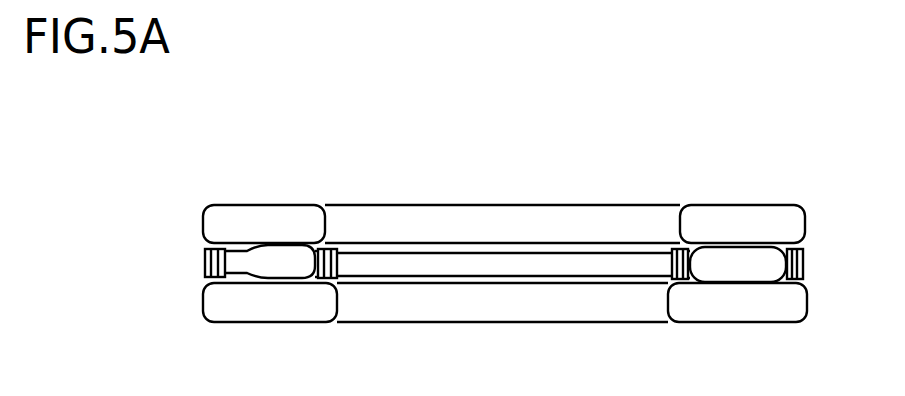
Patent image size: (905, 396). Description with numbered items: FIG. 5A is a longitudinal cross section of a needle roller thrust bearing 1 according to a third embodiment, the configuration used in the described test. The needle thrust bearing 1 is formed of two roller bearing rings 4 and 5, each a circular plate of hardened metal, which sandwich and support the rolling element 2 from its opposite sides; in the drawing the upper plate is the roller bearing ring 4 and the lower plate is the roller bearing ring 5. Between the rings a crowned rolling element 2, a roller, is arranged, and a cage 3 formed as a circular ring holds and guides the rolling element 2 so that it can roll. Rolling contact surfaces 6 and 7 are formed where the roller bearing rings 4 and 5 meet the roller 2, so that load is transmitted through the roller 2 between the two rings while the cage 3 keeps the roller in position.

The needle thrust bearing 1 is at (820, 197).
The rolling element 2 is at (282, 262).
The cage 3 is at (370, 262).
The roller bearing ring 4 is at (243, 217).
The roller bearing ring 5 is at (243, 308).
The rolling contact surface 6 is at (207, 250).
The rolling contact surface 7 is at (205, 276).